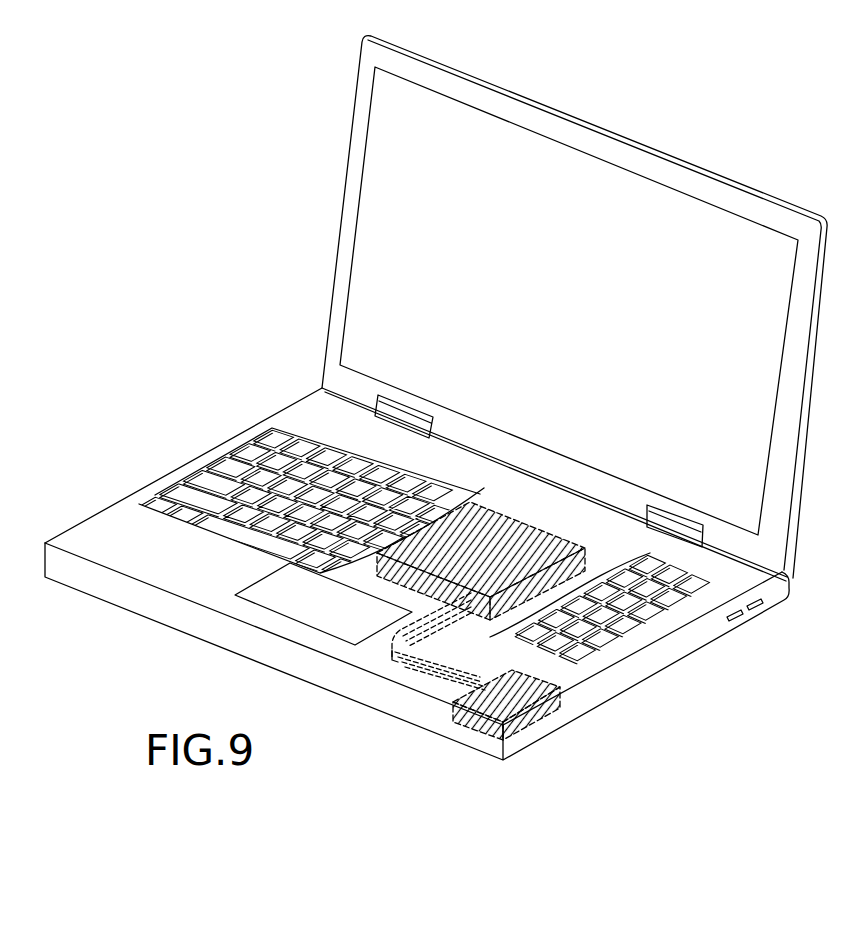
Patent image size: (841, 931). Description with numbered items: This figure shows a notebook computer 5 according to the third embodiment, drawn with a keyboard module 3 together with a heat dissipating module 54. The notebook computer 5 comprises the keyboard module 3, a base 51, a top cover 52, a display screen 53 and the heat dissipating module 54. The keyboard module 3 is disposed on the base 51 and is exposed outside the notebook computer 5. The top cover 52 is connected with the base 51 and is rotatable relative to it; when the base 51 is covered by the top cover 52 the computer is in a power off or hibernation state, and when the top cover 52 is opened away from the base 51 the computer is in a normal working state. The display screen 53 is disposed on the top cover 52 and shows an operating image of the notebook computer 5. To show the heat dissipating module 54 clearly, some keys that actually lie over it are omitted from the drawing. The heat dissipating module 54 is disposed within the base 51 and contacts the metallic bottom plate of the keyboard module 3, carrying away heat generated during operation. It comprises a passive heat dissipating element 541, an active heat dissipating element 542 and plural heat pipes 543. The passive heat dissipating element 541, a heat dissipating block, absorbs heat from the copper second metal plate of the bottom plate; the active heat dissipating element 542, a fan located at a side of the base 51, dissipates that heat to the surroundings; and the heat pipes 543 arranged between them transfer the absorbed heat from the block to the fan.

The notebook computer 5 is at (187, 211).
The base 51 is at (777, 591).
The top cover 52 is at (738, 197).
The display screen 53 is at (633, 188).
The keyboard module 3 is at (302, 449).
The heat dissipating module 54 is at (702, 673).
The passive heat dissipating element 541 is at (533, 550).
The active heat dissipating element 542 is at (549, 717).
The heat pipes 543 is at (394, 657).